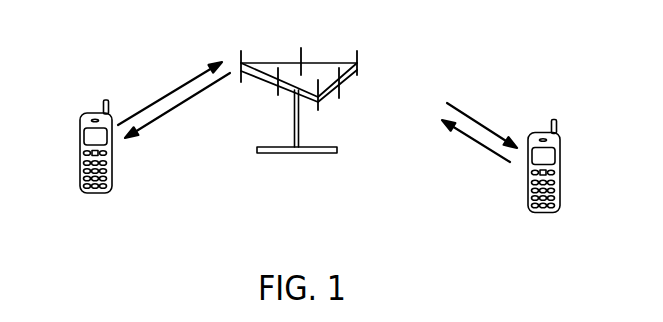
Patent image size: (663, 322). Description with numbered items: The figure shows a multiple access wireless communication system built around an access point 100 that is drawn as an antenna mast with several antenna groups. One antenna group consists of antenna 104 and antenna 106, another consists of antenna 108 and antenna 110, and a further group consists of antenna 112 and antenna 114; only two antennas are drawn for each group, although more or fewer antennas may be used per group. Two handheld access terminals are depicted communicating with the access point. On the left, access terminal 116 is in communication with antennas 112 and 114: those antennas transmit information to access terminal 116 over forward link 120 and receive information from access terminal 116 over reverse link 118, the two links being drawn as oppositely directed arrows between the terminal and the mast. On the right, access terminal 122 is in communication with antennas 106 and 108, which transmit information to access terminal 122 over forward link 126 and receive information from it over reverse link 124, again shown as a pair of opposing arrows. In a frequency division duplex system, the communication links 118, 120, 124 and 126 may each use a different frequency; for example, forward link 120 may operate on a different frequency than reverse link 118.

The access point 100 is at (307, 153).
The antenna 104 is at (319, 107).
The antenna 106 is at (340, 90).
The antenna 108 is at (358, 75).
The antenna 110 is at (301, 50).
The antenna 112 is at (240, 55).
The antenna 114 is at (279, 92).
The access terminal 116 is at (79, 127).
The reverse link 118 is at (180, 87).
The forward link 120 is at (167, 112).
The access terminal 122 is at (559, 158).
The reverse link 124 is at (485, 147).
The forward link 126 is at (478, 123).